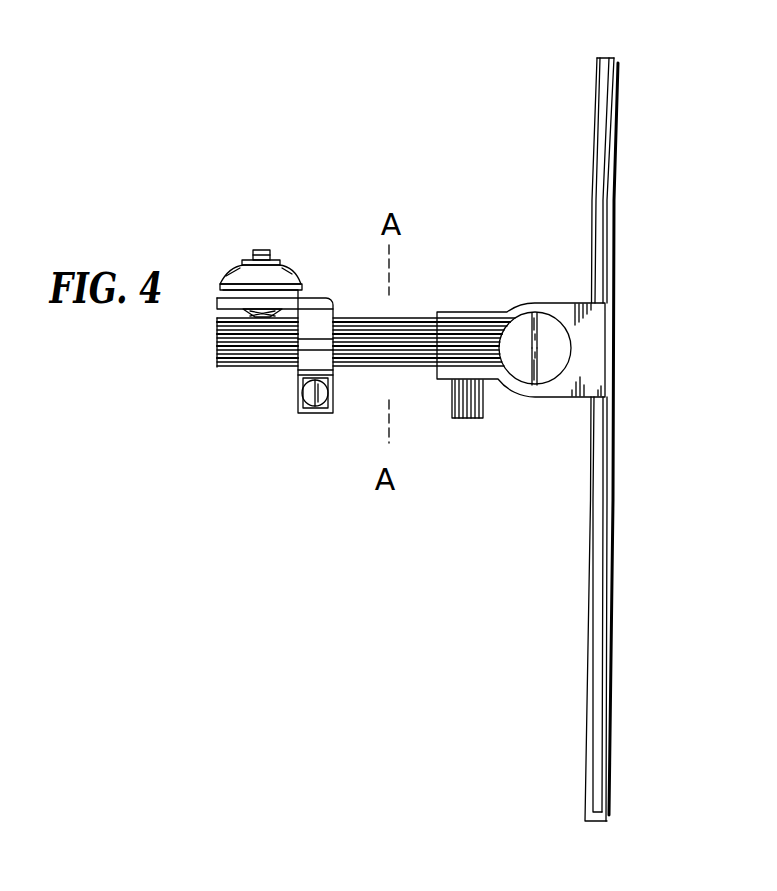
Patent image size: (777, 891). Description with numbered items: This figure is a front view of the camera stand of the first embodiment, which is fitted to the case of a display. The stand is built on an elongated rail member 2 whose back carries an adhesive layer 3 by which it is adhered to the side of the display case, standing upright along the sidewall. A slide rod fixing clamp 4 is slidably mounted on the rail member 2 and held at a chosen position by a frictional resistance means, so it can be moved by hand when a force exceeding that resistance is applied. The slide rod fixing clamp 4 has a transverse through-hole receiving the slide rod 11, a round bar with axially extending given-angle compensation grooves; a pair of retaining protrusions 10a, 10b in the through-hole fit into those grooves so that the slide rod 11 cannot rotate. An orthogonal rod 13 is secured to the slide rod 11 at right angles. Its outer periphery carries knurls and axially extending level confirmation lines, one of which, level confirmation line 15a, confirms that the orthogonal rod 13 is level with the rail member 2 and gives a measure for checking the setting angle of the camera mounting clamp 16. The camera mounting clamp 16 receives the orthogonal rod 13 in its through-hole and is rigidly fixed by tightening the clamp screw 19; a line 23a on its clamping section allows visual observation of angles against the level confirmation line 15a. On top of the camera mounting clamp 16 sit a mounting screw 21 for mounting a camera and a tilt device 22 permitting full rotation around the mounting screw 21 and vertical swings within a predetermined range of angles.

The rail member 2 is at (607, 241).
The adhesive layer 3 is at (618, 175).
The slide rod fixing clamp 4 is at (590, 380).
The retaining protrusion 10a is at (532, 313).
The retaining protrusion 10b is at (533, 385).
The slide rod 11 is at (520, 337).
The orthogonal rod 13 is at (418, 365).
The level confirmation line 15a is at (243, 340).
The camera mounting clamp 16 is at (330, 297).
The clamp screw 19 is at (311, 393).
The mounting screw 21 is at (263, 248).
The tilt device 22 is at (242, 277).
The line 23a is at (313, 345).